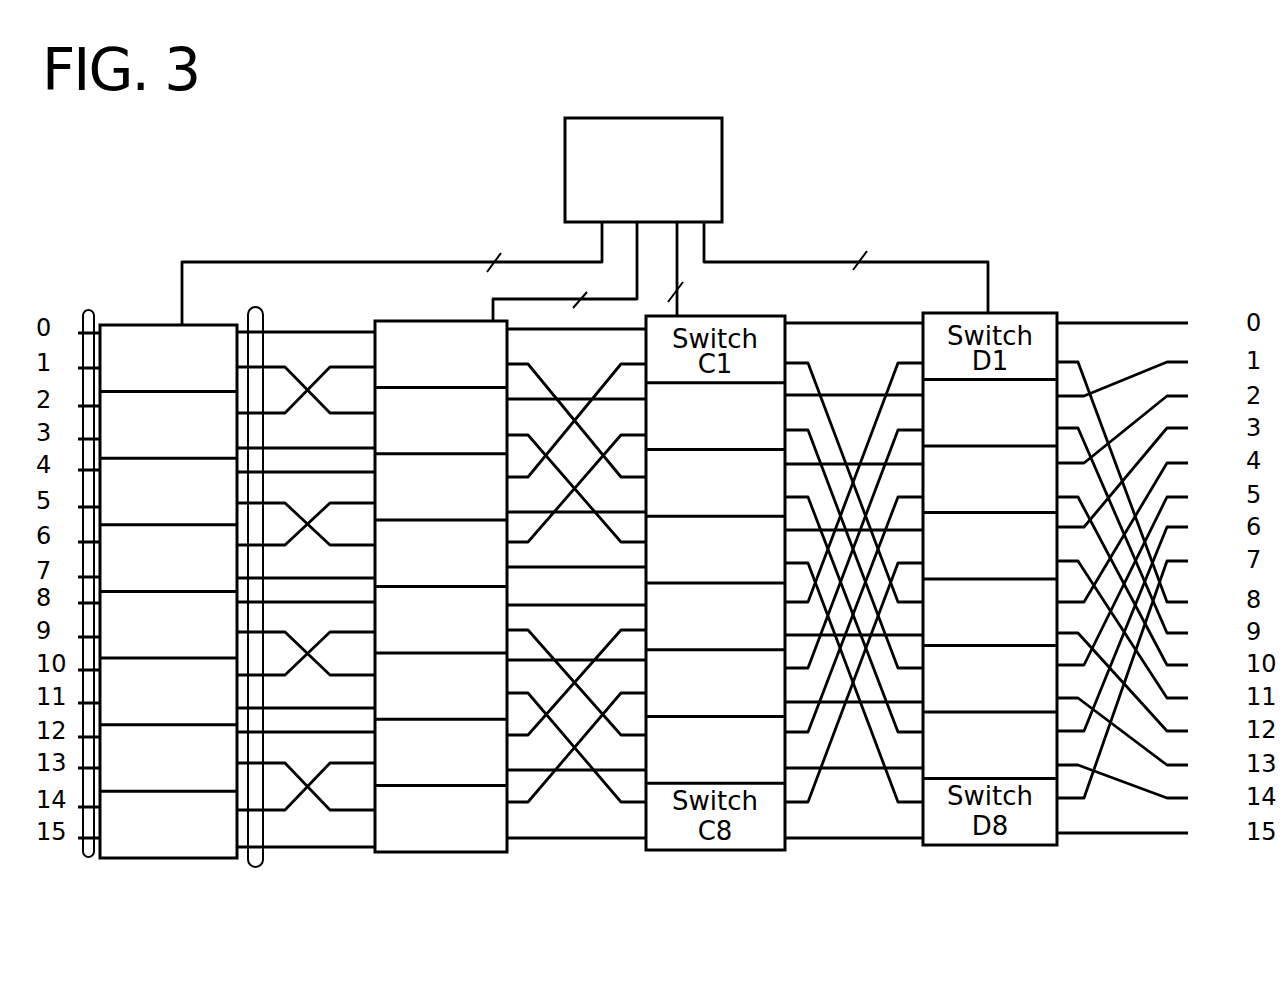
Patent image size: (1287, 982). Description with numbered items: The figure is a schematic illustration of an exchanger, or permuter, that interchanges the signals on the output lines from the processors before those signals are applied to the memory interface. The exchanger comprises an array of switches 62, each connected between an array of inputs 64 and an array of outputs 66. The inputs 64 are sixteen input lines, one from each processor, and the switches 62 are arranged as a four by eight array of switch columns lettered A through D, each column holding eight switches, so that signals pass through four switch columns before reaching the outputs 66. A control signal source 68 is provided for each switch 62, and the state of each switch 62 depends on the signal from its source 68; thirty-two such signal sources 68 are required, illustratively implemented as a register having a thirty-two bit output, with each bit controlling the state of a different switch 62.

The switch 62 is at (203, 858).
The inputs 64 is at (92, 314).
The outputs 66 is at (253, 310).
The control signal source 68 is at (722, 186).